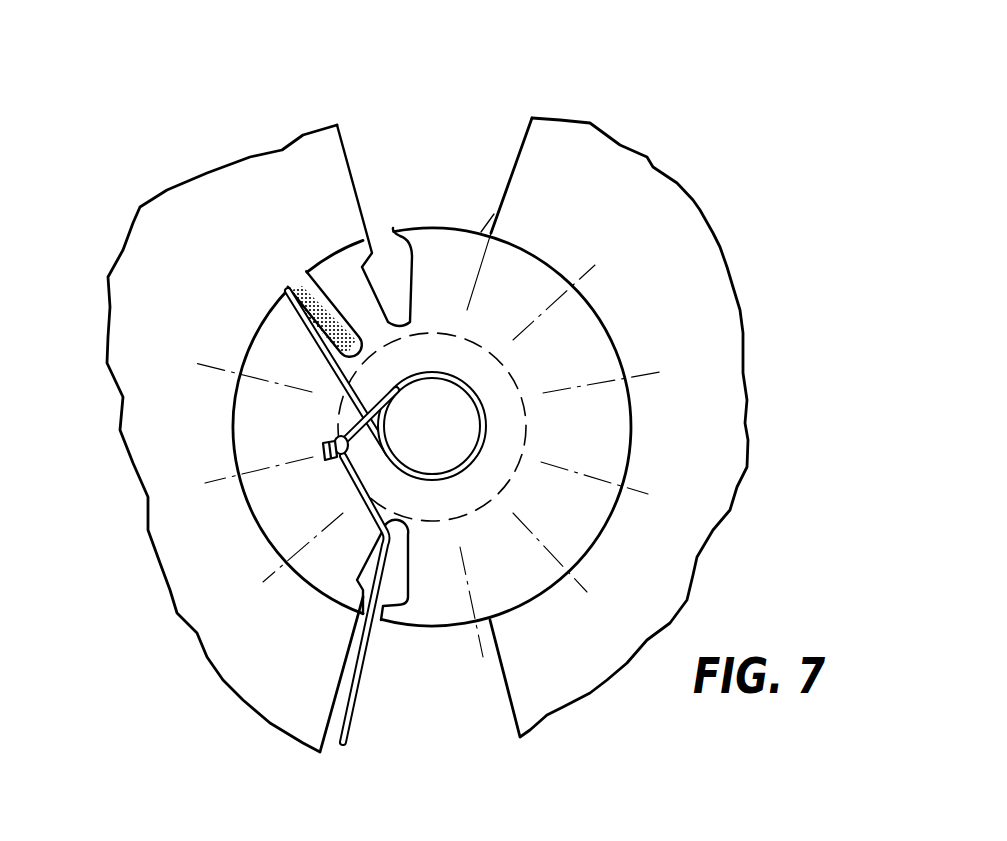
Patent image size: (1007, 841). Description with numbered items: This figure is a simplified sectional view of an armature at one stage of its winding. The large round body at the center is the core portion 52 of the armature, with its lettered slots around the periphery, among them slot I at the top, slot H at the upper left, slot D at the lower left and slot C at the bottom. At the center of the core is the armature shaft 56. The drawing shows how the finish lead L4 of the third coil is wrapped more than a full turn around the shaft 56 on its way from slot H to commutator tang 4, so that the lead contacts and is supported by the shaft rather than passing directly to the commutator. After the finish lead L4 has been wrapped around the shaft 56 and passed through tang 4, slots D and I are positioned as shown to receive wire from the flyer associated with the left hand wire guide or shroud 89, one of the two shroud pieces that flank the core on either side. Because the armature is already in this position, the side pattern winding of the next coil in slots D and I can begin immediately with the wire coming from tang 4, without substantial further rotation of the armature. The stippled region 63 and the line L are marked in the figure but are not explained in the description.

The wire guide or shroud 89 is at (283, 153).
The core portion 52 is at (602, 322).
The armature shaft 56 is at (487, 430).
The commutator tang 4 is at (329, 452).
The filler region 63 is at (290, 291).
The finish lead L4 is at (342, 373).
The slot I is at (387, 257).
The line L is at (461, 229).
The slot H is at (323, 284).
The slot D is at (380, 617).
The slot C is at (473, 610).